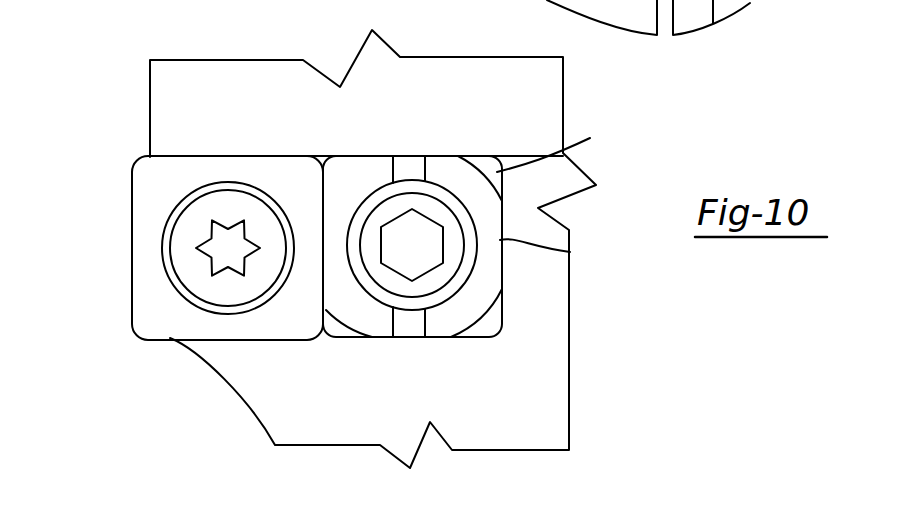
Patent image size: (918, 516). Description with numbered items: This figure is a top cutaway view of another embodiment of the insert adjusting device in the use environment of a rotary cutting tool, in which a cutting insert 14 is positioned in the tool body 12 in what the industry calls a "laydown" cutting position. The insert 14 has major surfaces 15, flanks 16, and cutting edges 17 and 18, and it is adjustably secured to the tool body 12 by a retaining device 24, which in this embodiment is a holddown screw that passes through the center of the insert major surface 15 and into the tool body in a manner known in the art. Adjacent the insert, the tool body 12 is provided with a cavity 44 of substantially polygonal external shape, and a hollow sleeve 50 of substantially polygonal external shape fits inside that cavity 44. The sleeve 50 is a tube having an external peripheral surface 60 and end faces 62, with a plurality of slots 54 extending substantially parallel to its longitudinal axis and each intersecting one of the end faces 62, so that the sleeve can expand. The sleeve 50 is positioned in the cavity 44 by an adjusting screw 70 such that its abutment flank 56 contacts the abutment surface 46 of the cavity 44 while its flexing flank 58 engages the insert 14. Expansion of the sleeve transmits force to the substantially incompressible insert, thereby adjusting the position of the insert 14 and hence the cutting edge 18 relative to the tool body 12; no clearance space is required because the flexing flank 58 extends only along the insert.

The tool body 12 is at (148, 106).
The cutting insert 14 is at (128, 268).
The major surfaces 15 is at (162, 190).
The flanks 16 is at (225, 157).
The cutting edges 17 is at (172, 342).
The cutting edge 18 is at (150, 341).
The retaining device 24 is at (243, 200).
The cavity 44 is at (483, 163).
The abutment surface 46 is at (559, 145).
The hollow sleeve 50 is at (338, 163).
The slots 54 is at (400, 165).
The abutment flank 56 is at (580, 250).
The flexing flank 58 is at (323, 268).
The external peripheral surface 60 is at (338, 320).
The end faces 62 is at (473, 310).
The adjusting screw 70 is at (430, 208).